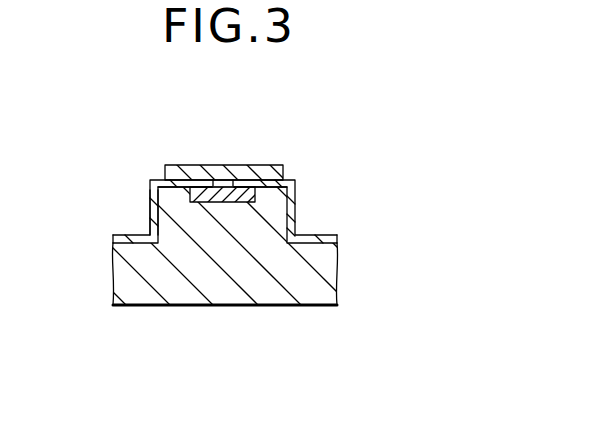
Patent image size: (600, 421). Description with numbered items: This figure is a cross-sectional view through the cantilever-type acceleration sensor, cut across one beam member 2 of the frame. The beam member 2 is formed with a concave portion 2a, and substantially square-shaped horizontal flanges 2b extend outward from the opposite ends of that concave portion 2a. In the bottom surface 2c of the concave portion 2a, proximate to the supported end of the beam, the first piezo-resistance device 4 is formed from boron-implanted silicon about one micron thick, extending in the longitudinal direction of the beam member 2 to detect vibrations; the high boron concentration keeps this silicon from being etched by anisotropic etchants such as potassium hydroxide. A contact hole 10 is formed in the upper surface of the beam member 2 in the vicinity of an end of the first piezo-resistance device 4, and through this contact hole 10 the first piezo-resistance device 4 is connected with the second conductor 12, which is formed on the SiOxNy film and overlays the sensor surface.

The beam member 2 is at (397, 190).
The concave portion 2a is at (296, 210).
The horizontal flange 2b is at (337, 256).
The bottom surface 2c is at (170, 193).
The first piezo-resistance device 4 is at (205, 202).
The contact hole 10 is at (225, 186).
The second conductor 12 is at (184, 176).